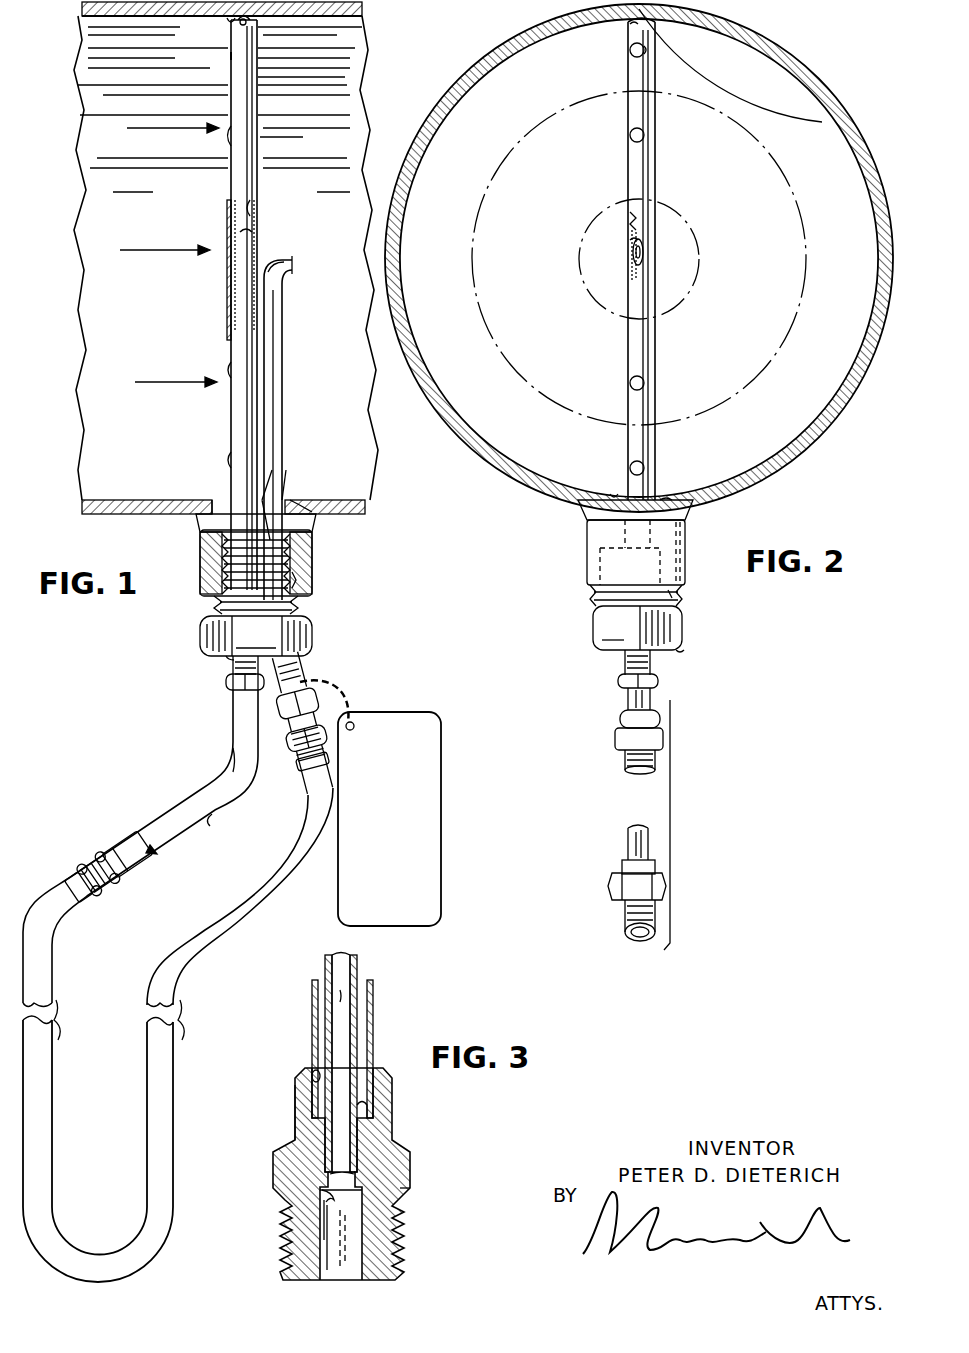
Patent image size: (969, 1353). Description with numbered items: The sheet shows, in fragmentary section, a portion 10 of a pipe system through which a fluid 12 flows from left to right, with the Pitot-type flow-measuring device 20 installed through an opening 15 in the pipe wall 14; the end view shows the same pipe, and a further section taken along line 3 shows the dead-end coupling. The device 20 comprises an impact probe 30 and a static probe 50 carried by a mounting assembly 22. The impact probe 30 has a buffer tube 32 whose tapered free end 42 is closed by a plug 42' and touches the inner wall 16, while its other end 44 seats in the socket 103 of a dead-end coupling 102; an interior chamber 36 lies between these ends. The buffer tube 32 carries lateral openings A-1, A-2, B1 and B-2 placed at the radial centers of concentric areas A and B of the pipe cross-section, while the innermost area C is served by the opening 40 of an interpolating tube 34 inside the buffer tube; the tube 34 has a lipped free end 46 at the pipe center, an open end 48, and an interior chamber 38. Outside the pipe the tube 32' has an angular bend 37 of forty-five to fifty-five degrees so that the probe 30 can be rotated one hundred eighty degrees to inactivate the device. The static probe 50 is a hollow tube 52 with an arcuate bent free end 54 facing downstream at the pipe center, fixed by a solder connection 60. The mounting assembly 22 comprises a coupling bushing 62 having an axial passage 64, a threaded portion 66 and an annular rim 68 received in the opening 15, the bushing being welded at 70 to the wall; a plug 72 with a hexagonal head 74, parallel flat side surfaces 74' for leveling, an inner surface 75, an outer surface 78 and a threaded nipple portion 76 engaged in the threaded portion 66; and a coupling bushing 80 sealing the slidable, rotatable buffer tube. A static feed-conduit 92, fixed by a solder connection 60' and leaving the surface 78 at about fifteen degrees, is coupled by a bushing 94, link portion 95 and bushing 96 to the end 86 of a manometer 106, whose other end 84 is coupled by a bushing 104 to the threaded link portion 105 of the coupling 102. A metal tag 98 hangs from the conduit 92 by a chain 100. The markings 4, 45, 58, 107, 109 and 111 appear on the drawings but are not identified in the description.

In FIG. 1, the pipe portion 10 is at (82, 28).
In FIG. 2, the pipe portion 10 is at (832, 66).
In FIG. 1, the fluid 12 is at (124, 225).
In FIG. 1, the pipe wall 14 is at (95, 513).
In FIG. 2, the pipe wall 14 is at (738, 249).
In FIG. 1, the opening 15 is at (222, 504).
In FIG. 2, the opening 15 is at (612, 492).
In FIG. 1, the inner wall 16 is at (362, 30).
In FIG. 2, the inner wall 16 is at (824, 106).
In FIG. 1, the flow-measuring device 20 is at (222, 432).
In FIG. 2, the flow-measuring device 20 is at (615, 162).
In FIG. 1, the mounting assembly 22 is at (365, 614).
In FIG. 2, the mounting assembly 22 is at (690, 620).
In FIG. 1, the impact probe 30 is at (222, 182).
In FIG. 1, the buffer tube 32 is at (260, 303).
In FIG. 2, the buffer tube 32 is at (641, 446).
In FIG. 3, the buffer tube 32 is at (362, 1049).
In FIG. 1, the tube 32' is at (215, 831).
In FIG. 2, the tube 32' is at (608, 716).
In FIG. 1, the interpolating tube 34 is at (240, 282).
In FIG. 2, the interpolating tube 34 is at (634, 274).
In FIG. 3, the interpolating tube 34 is at (352, 960).
In FIG. 1, the interior chamber 36 is at (252, 212).
In FIG. 3, the interior chamber 36 is at (357, 1022).
In FIG. 1, the angular bend 37 is at (246, 780).
In FIG. 3, the interior chamber 38 is at (344, 1000).
In FIG. 1, the opening 40 is at (230, 240).
In FIG. 2, the opening 40 is at (645, 258).
In FIG. 1, the free end 42 is at (270, 30).
In FIG. 2, the free end 42 is at (659, 40).
In FIG. 1, the plug 42' is at (209, 30).
In FIG. 2, the plug 42' is at (607, 46).
In FIG. 3, the other end 44 is at (296, 1120).
In FIG. 3, the recess 45 is at (366, 1112).
In FIG. 1, the lipped free end 46 is at (252, 232).
In FIG. 2, the lipped free end 46 is at (632, 248).
In FIG. 3, the open end 48 is at (354, 1182).
In FIG. 1, the static probe 50 is at (292, 334).
In FIG. 1, the hollow tube 52 is at (276, 386).
In FIG. 1, the arcuate bent free end 54 is at (294, 258).
In FIG. 1, the bent portion 58 is at (286, 274).
In FIG. 1, the solder connection 60 is at (277, 559).
In FIG. 1, the solder connection 60' is at (325, 647).
In FIG. 1, the coupling bushing 62 is at (312, 566).
In FIG. 2, the coupling bushing 62 is at (587, 550).
In FIG. 1, the axial passage 64 is at (288, 492).
In FIG. 1, the threaded portion 66 is at (222, 560).
In FIG. 2, the threaded portion 66 is at (592, 590).
In FIG. 1, the annular rim 68 is at (316, 506).
In FIG. 2, the annular rim 68 is at (664, 500).
In FIG. 1, the weld 70 is at (204, 522).
In FIG. 2, the weld 70 is at (582, 510).
In FIG. 1, the plug 72 is at (208, 608).
In FIG. 2, the plug 72 is at (584, 614).
In FIG. 1, the hexagonal head 74 is at (270, 636).
In FIG. 2, the hexagonal head 74 is at (618, 649).
In FIG. 1, the flat side surfaces 74' is at (254, 637).
In FIG. 2, the flat side surfaces 74' is at (613, 628).
In FIG. 1, the inner surface 75 is at (268, 492).
In FIG. 1, the threaded nipple portion 76 is at (300, 580).
In FIG. 2, the threaded nipple portion 76 is at (682, 598).
In FIG. 1, the outer surface 78 is at (228, 654).
In FIG. 2, the outer surface 78 is at (682, 650).
In FIG. 1, the coupling bushing 80 is at (236, 688).
In FIG. 2, the coupling bushing 80 is at (622, 682).
In FIG. 1, the manometer end 84 is at (52, 932).
In FIG. 1, the manometer end 86 is at (218, 934).
In FIG. 1, the static feed-conduit 92 is at (308, 676).
In FIG. 2, the static feed-conduit 92 is at (660, 718).
In FIG. 1, the bushing 94 is at (276, 712).
In FIG. 2, the bushing 94 is at (663, 740).
In FIG. 1, the link portion 95 is at (320, 740).
In FIG. 2, the link portion 95 is at (656, 760).
In FIG. 1, the bushing 96 is at (298, 775).
In FIG. 1, the metal tag 98 is at (425, 770).
In FIG. 1, the chain 100 is at (352, 700).
In FIG. 1, the dead-end coupling 102 is at (132, 840).
In FIG. 2, the dead-end coupling 102 is at (662, 888).
In FIG. 3, the dead-end coupling 102 is at (264, 1164).
In FIG. 3, the socket 103 is at (314, 1070).
In FIG. 1, the bushing 104 is at (72, 878).
In FIG. 1, the threaded link portion 105 is at (98, 850).
In FIG. 2, the threaded link portion 105 is at (656, 928).
In FIG. 3, the threaded link portion 105 is at (396, 1236).
In FIG. 1, the manometer 106 is at (195, 1098).
In FIG. 3, the shoulder 107 is at (408, 1188).
In FIG. 3, the bore 109 is at (323, 1246).
In FIG. 3, the passage 111 is at (322, 1216).
In FIG. 1, the section line 3 is at (152, 850).
In FIG. 2, the section line 4 is at (656, 197).
In FIG. 2, the concentric area A is at (833, 274).
In FIG. 2, the concentric area B is at (752, 274).
In FIG. 2, the innermost area C is at (675, 274).
In FIG. 1, the lateral opening A-1 is at (231, 56).
In FIG. 2, the lateral opening A-1 is at (646, 52).
In FIG. 1, the lateral opening A-2 is at (229, 464).
In FIG. 2, the lateral opening A-2 is at (646, 136).
In FIG. 1, the lateral opening B1 is at (229, 140).
In FIG. 1, the lateral opening B-2 is at (229, 372).
In FIG. 2, the lateral opening B-2 is at (646, 386).